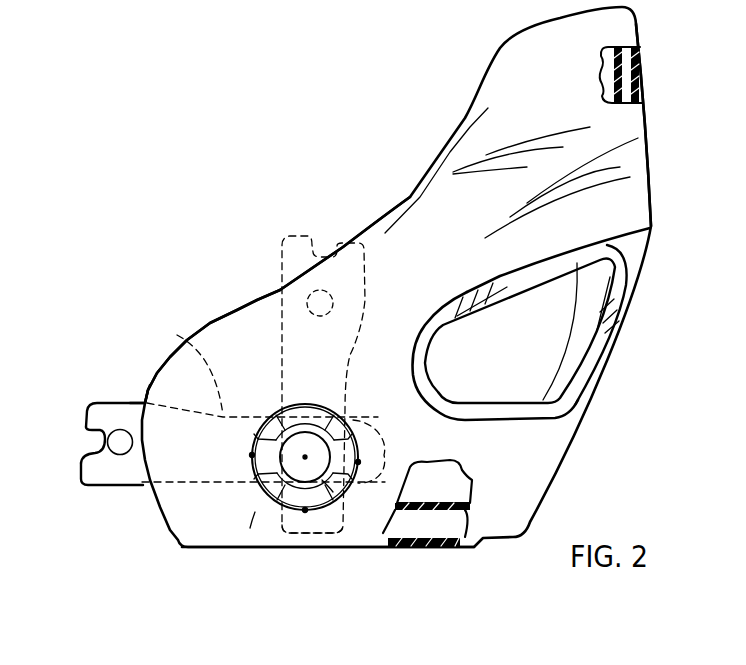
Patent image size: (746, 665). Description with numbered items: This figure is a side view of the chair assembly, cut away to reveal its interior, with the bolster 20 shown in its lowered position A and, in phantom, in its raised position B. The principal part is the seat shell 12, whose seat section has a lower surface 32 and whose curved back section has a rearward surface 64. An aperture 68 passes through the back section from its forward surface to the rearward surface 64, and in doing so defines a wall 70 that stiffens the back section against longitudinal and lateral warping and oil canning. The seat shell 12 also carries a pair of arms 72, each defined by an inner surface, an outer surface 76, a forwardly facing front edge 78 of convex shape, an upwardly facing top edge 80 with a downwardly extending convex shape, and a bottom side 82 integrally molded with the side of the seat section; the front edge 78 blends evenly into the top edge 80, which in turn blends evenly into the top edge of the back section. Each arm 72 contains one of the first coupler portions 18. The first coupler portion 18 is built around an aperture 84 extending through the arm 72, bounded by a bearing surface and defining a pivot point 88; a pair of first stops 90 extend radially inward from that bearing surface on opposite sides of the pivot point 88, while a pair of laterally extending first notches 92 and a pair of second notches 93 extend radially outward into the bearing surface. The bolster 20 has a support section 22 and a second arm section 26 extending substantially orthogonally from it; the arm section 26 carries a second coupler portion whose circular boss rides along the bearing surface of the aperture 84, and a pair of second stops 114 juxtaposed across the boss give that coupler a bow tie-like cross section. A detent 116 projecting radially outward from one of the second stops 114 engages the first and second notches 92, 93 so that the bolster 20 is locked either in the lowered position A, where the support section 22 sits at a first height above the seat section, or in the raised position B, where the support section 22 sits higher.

The seat shell 12 is at (562, 451).
The first coupler portion 18 is at (308, 527).
The bolster 20 is at (97, 403).
The support section 22 is at (84, 430).
The second arm section 26 is at (262, 367).
The lower surface 32 is at (205, 550).
The rearward surface 64 is at (650, 145).
The aperture 68 is at (550, 332).
The wall 70 is at (587, 363).
The arm 72 is at (253, 303).
The outer surface 76 is at (227, 335).
The front edge 78 is at (145, 403).
The top edge 80 is at (380, 223).
The bottom side 82 is at (252, 528).
The aperture 84 is at (563, 24).
The pivot point 88 is at (305, 455).
The first stops 90 is at (340, 418).
The first notches 92 is at (252, 456).
The second notches 93 is at (308, 405).
The second stops 114 is at (350, 458).
The detent 116 is at (252, 453).